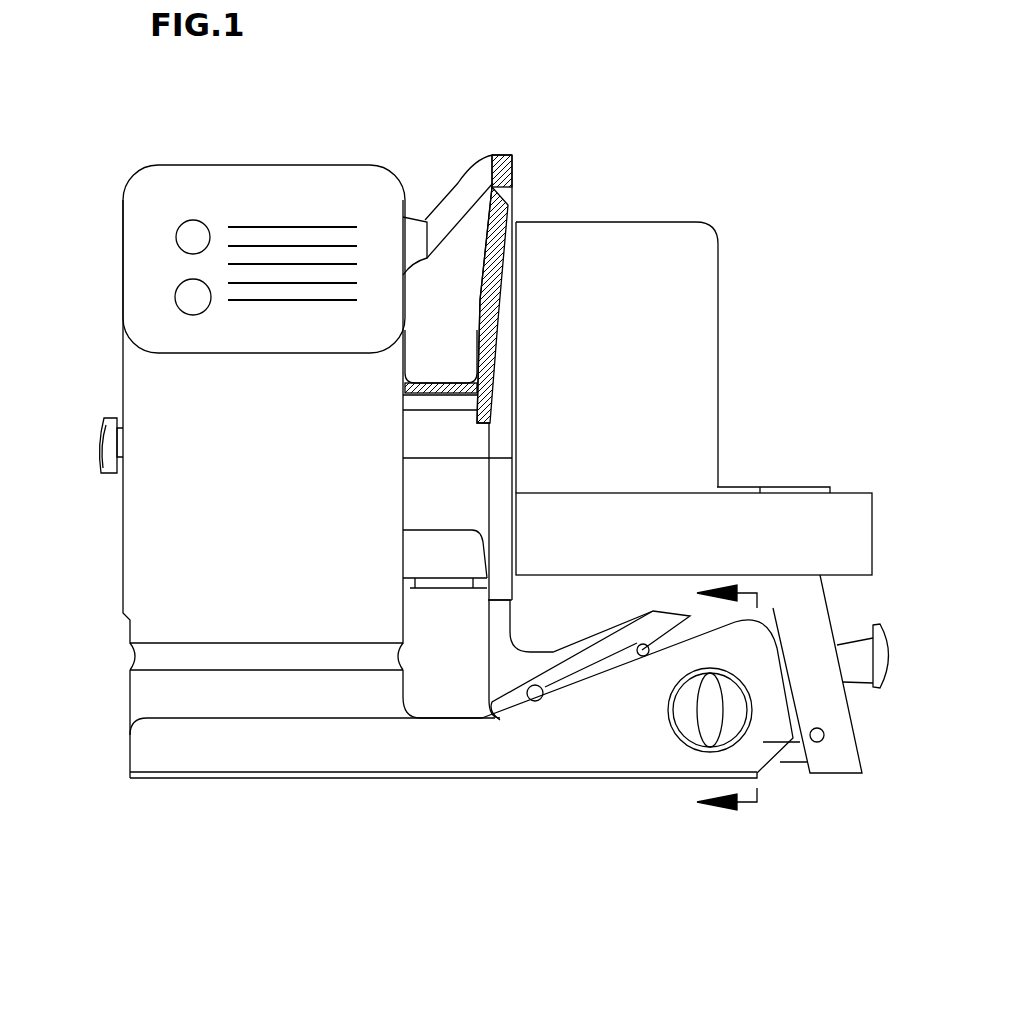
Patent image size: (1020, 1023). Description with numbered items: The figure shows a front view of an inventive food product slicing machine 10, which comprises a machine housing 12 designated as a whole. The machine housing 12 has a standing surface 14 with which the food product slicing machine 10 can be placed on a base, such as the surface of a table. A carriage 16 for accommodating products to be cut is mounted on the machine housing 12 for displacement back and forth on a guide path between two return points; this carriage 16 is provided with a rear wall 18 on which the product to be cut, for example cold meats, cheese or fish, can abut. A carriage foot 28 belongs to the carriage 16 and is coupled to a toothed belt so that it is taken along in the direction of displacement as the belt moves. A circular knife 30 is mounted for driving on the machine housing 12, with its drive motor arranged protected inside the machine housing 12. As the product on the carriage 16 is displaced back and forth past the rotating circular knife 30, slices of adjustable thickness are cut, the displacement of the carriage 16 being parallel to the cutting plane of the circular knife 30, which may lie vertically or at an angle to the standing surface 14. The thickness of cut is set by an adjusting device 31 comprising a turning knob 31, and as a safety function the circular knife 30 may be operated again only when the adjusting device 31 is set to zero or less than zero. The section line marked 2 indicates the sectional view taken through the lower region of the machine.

The food product slicing machine 10 is at (765, 218).
The machine housing 12 is at (123, 693).
The standing surface 14 is at (419, 780).
The carriage 16 is at (848, 508).
The rear wall 18 is at (647, 245).
The carriage foot 28 is at (780, 758).
The circular knife 30 is at (487, 320).
The adjusting device for the thickness of cut 31 is at (700, 695).
The section line 2- 2 is at (738, 701).